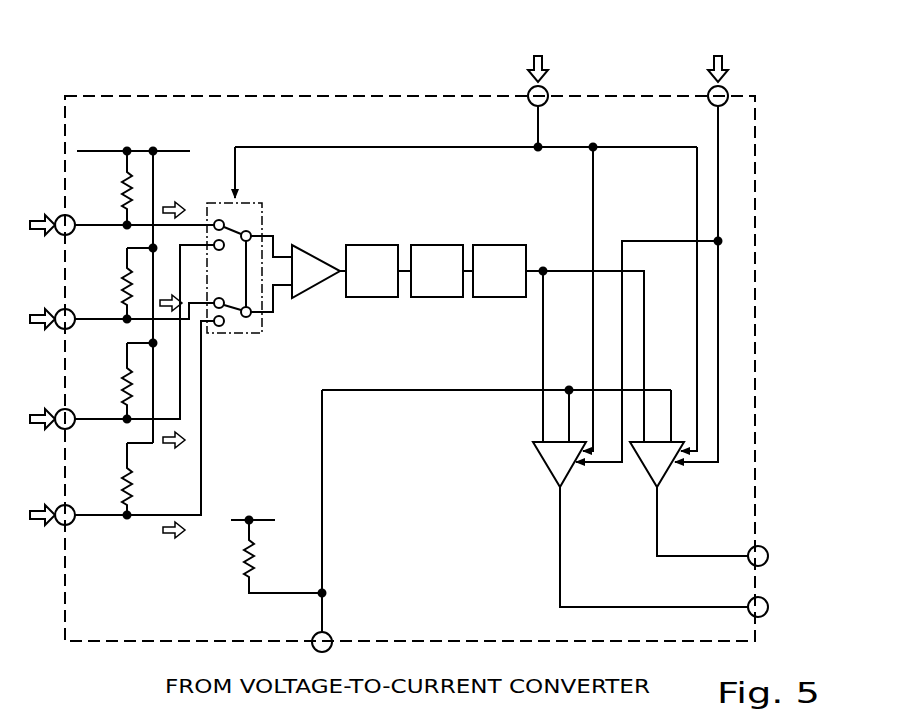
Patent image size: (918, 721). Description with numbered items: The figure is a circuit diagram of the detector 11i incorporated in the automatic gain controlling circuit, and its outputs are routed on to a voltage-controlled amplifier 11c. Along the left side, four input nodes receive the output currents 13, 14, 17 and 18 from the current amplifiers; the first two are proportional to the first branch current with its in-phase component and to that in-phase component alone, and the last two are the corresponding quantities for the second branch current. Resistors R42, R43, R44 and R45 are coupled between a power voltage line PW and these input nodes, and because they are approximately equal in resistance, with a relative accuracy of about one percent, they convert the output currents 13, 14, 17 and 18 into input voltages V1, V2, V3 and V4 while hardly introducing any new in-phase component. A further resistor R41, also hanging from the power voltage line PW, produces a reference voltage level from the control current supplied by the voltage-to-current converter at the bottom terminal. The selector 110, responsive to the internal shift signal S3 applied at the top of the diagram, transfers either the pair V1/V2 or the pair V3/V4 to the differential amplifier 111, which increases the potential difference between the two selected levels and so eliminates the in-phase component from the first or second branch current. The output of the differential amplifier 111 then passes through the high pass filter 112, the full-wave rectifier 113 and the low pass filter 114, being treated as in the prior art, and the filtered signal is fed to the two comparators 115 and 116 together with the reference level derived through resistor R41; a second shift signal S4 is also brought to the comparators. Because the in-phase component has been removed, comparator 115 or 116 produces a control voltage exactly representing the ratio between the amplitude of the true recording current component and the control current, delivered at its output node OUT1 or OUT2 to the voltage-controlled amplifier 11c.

The detector 11i is at (756, 152).
The voltage-controlled amplifier 11c is at (821, 549).
The output current 13 is at (36, 235).
The output current 14 is at (36, 329).
The output current 17 is at (36, 429).
The output current 18 is at (36, 525).
The selector 110 is at (248, 203).
The differential amplifier 111 is at (319, 245).
The high pass filter 112 is at (374, 245).
The full-wave rectifier 113 is at (436, 245).
The low pass filter 114 is at (500, 245).
The comparator 115 is at (548, 465).
The comparator 116 is at (647, 465).
The resistor R41 is at (255, 562).
The resistor R42 is at (121, 188).
The resistor R43 is at (121, 287).
The resistor R44 is at (121, 387).
The resistor R45 is at (121, 487).
The power voltage line PW is at (99, 150).
The input voltage V1 is at (169, 204).
The input voltage V2 is at (168, 298).
The input voltage V3 is at (165, 450).
The input voltage V4 is at (165, 540).
The internal shift signal S3 is at (545, 58).
The control signal S4 is at (720, 54).
The output node OUT1 is at (565, 590).
The output node OUT2 is at (662, 532).